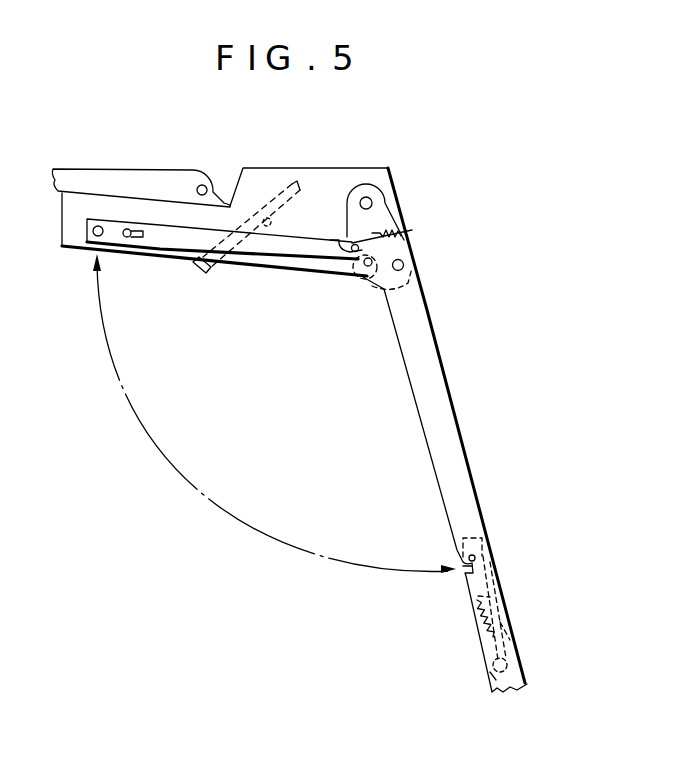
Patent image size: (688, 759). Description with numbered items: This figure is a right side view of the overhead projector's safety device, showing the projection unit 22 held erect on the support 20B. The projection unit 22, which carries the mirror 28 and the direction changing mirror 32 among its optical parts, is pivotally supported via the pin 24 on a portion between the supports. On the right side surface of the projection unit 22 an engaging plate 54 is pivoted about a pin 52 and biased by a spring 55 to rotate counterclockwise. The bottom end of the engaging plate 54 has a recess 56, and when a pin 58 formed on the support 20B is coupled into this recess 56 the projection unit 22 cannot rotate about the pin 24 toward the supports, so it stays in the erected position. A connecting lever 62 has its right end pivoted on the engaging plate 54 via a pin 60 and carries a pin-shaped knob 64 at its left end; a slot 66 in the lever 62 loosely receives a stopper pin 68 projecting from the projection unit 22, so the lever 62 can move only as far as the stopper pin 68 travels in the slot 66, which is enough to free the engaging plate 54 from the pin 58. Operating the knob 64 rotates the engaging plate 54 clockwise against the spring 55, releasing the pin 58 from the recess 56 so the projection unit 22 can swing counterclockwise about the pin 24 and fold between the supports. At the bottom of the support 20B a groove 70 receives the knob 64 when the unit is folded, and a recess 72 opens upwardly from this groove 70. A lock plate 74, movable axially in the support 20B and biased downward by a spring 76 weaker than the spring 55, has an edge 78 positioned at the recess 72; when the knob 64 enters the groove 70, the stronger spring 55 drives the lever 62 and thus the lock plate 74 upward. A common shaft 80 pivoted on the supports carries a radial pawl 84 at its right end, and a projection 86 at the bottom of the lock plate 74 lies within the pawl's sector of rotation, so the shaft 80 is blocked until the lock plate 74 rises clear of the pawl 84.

The support 20B is at (447, 393).
The projection unit 22 is at (313, 160).
The pin 24 is at (403, 268).
The mirror 28 is at (267, 218).
The direction changing mirror 32 is at (139, 172).
The pin 52 is at (369, 196).
The engaging plate 54 is at (383, 212).
The spring 55 is at (400, 236).
The recess 56 is at (358, 278).
The pin 58 is at (372, 262).
The pin 60 is at (350, 248).
The connecting lever 62 is at (192, 240).
The knob 64 is at (93, 237).
The slot 66 is at (142, 240).
The stopper pin 68 is at (124, 240).
The groove 70 is at (466, 578).
The recess 72 is at (483, 553).
The lock plate 74 is at (506, 600).
The spring 76 is at (470, 633).
The edge 78 is at (455, 574).
The common shaft 80 is at (489, 674).
The pawl 84 is at (510, 661).
The projection 86 is at (508, 626).